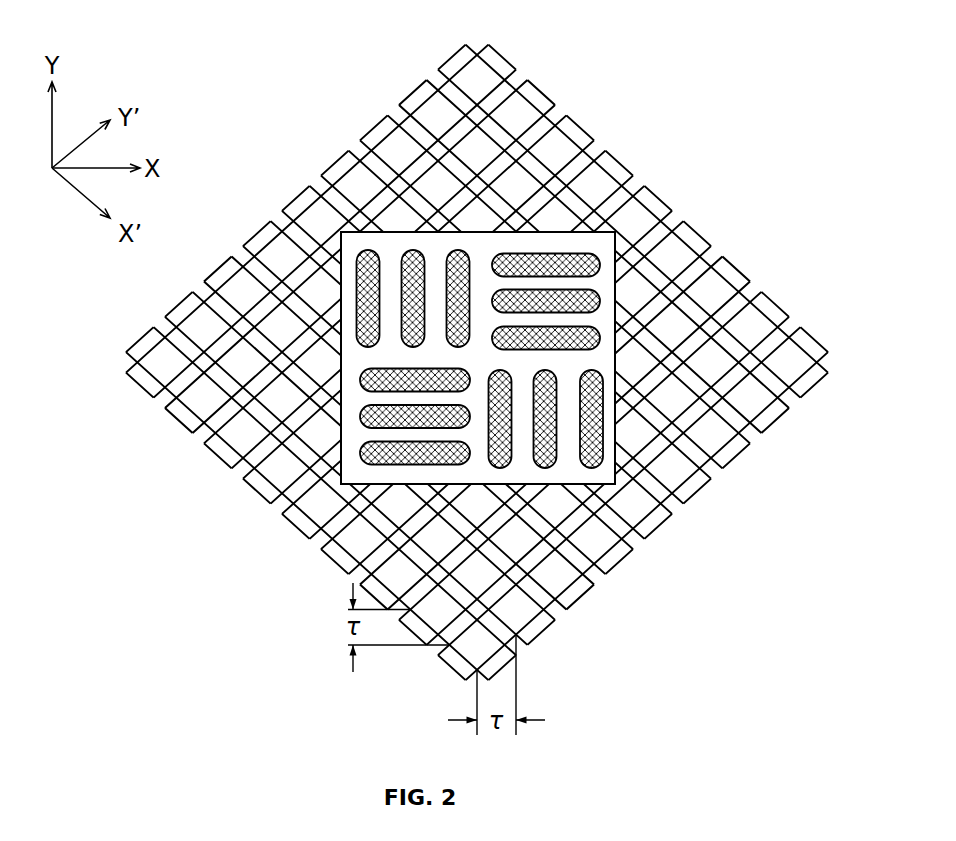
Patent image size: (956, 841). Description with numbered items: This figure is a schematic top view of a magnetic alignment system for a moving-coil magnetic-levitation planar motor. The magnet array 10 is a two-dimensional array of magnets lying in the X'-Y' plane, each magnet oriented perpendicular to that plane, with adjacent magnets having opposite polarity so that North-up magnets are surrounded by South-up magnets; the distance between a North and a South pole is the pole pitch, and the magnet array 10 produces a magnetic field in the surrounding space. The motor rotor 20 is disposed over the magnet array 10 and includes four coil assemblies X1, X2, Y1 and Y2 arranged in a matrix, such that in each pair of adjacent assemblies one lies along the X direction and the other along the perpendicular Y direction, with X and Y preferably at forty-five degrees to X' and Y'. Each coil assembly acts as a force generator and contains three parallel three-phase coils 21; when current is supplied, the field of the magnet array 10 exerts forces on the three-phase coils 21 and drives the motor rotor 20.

The magnet array 10 is at (542, 88).
The motor rotor 20 is at (492, 365).
The three-phase coil 21 is at (603, 427).
The coil assembly X1 is at (350, 270).
The coil assembly X2 is at (637, 484).
The coil assembly Y1 is at (608, 292).
The coil assembly Y2 is at (350, 443).